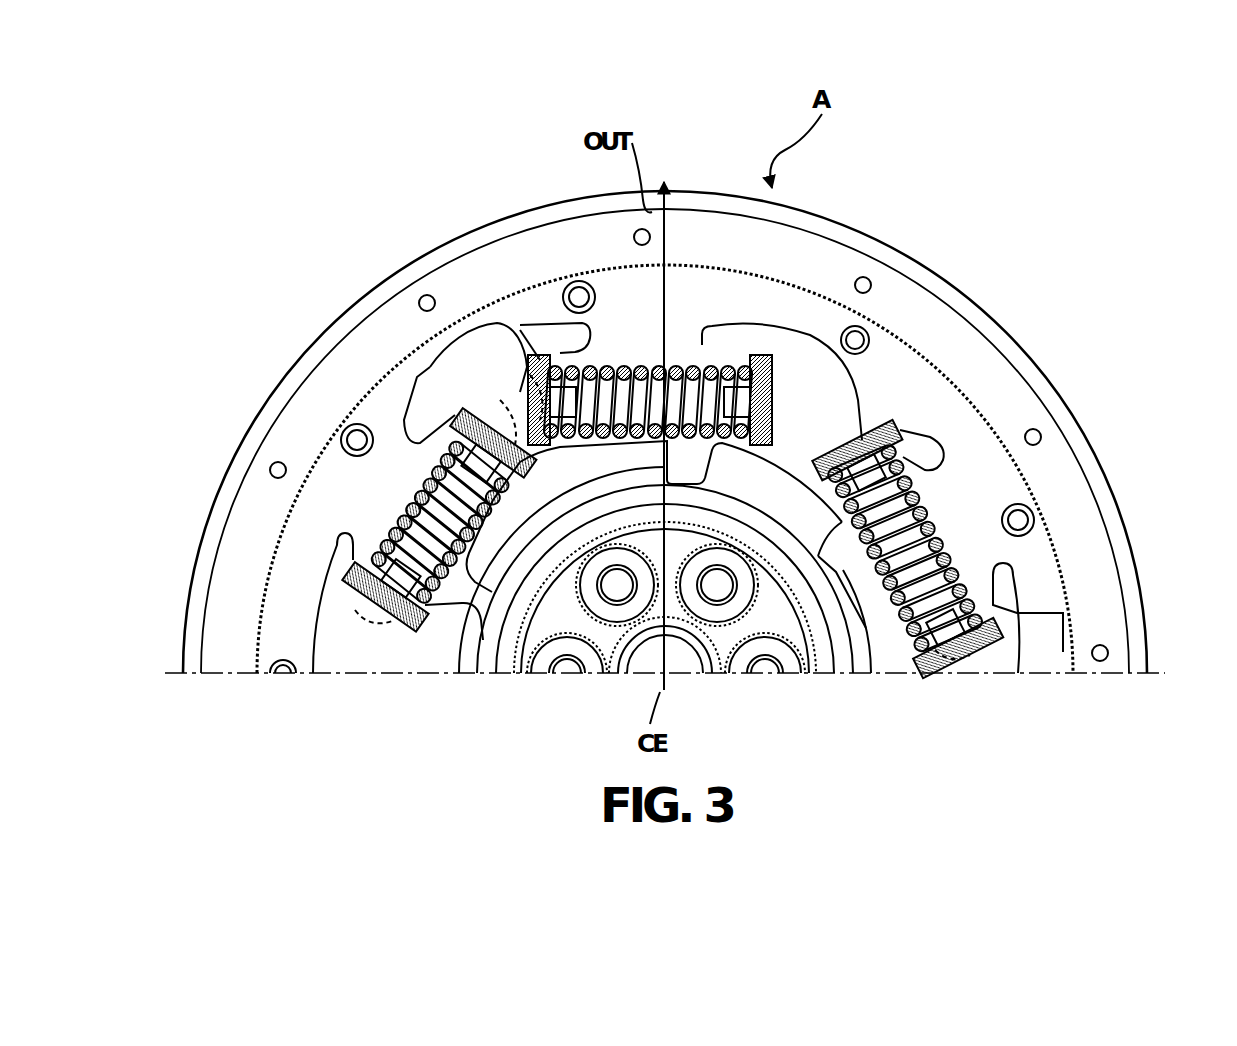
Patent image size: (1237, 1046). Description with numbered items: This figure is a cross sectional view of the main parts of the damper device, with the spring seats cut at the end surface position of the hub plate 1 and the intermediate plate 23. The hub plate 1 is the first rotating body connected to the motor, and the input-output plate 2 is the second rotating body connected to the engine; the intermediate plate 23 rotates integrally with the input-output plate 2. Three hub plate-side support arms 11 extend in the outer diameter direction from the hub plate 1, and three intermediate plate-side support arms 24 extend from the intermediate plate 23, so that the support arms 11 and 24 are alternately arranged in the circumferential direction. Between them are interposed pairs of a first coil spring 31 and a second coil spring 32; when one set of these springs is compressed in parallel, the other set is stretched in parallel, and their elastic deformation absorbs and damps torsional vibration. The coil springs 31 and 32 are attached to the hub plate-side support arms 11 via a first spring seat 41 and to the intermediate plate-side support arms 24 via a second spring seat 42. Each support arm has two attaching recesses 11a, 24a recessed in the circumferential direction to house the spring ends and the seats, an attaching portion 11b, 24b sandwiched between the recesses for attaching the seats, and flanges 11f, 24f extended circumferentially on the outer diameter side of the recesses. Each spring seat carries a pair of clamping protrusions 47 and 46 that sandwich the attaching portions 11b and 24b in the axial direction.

The hub plate 1 is at (723, 680).
The input-output plate 2 is at (1093, 434).
The hub plate-side support arm 11 is at (760, 318).
The attaching recess 11a is at (837, 563).
The attaching portion 11b is at (793, 433).
The flange 11f is at (727, 345).
The intermediate plate 23 is at (551, 490).
The intermediate plate-side support arm 24 is at (498, 400).
The attaching recess 24a is at (568, 337).
The attaching portion 24b is at (512, 405).
The flange 24f is at (415, 427).
The first coil spring 31 is at (690, 365).
The second coil spring 32 is at (420, 530).
The first spring seat 41 is at (773, 353).
The second spring seat 42 is at (450, 413).
The clamping protrusion 46 is at (490, 425).
The clamping protrusion 47 is at (862, 330).